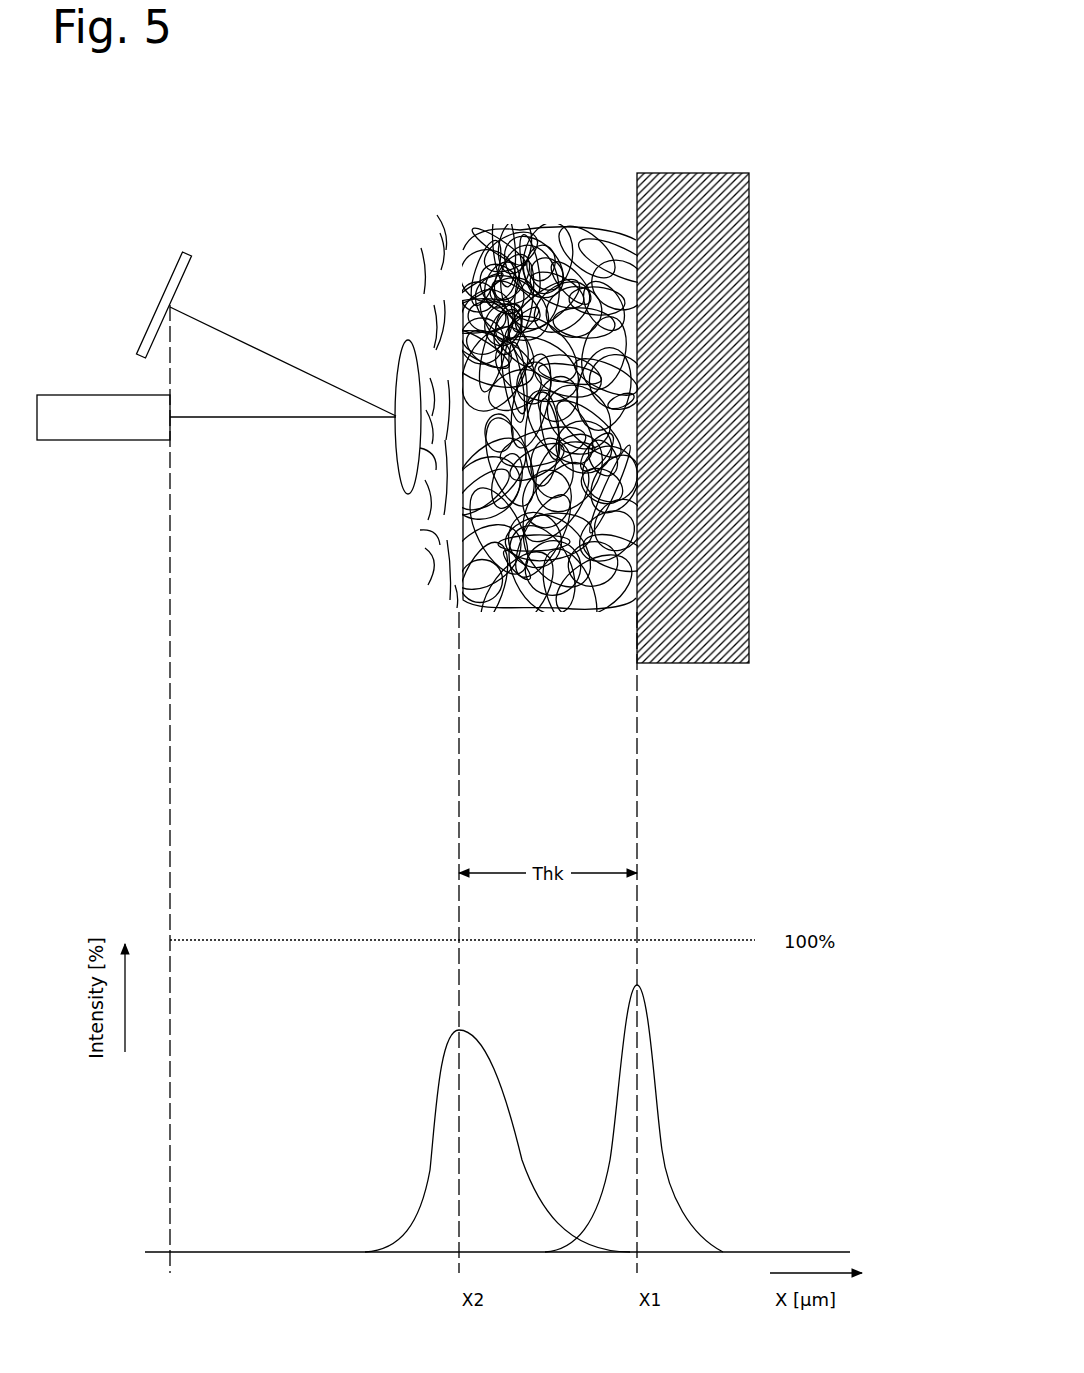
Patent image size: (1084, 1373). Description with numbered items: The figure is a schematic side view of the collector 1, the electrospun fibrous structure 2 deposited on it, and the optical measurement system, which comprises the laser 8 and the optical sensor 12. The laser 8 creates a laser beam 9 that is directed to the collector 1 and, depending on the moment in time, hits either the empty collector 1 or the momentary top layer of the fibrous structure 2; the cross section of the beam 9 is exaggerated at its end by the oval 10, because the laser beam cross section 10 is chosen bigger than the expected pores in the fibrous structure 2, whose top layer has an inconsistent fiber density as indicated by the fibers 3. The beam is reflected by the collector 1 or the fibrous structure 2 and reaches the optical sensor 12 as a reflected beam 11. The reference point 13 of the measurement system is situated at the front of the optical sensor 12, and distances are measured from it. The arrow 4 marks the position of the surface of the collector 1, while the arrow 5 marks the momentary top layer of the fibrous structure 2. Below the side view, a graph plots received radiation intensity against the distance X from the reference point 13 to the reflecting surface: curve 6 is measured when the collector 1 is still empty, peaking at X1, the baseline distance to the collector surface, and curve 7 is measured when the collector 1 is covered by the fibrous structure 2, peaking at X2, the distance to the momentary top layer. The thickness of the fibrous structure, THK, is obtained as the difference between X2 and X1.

The collector 1 is at (668, 192).
The fibrous structure 2 is at (482, 228).
The fibers 3 is at (437, 235).
The arrow 4 is at (628, 157).
The arrow 5 is at (457, 162).
The curve 6 is at (660, 1075).
The curve 7 is at (505, 1075).
The laser 8 is at (80, 425).
The laser beam 9 is at (223, 418).
The laser beam cross section 10 is at (400, 352).
The reflected beam 11 is at (220, 328).
The optical sensor 12 is at (152, 329).
The reference point 13 is at (183, 300).